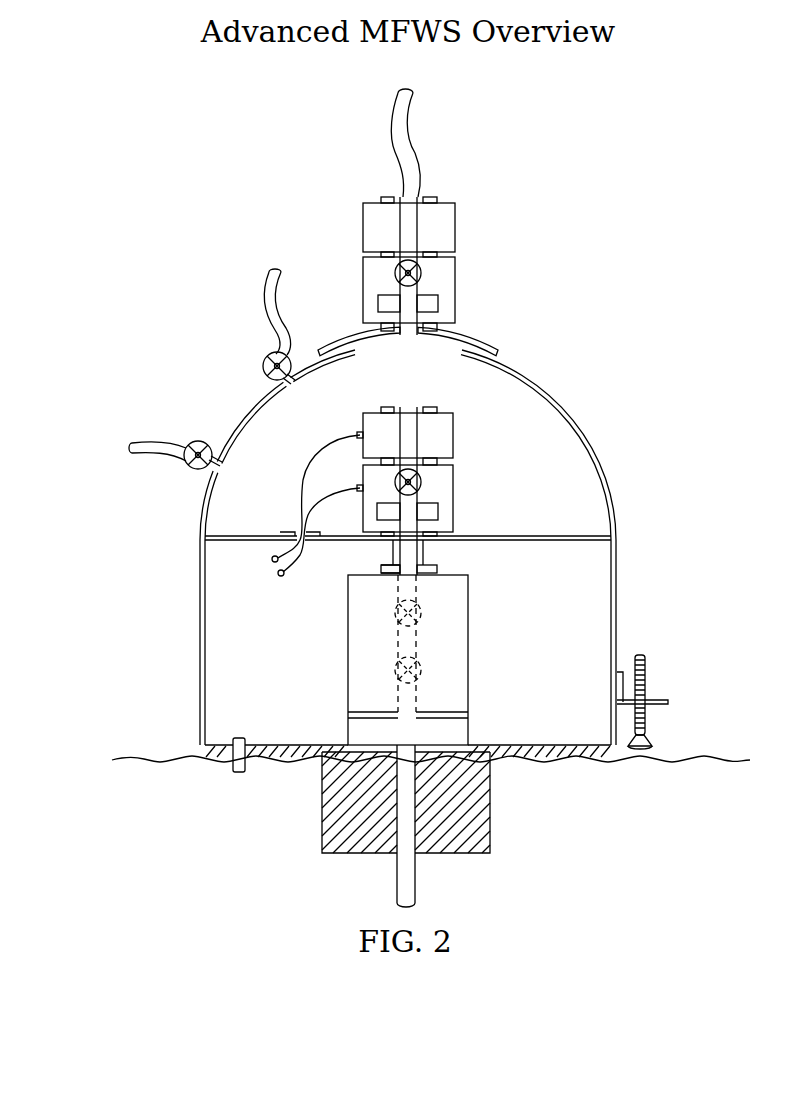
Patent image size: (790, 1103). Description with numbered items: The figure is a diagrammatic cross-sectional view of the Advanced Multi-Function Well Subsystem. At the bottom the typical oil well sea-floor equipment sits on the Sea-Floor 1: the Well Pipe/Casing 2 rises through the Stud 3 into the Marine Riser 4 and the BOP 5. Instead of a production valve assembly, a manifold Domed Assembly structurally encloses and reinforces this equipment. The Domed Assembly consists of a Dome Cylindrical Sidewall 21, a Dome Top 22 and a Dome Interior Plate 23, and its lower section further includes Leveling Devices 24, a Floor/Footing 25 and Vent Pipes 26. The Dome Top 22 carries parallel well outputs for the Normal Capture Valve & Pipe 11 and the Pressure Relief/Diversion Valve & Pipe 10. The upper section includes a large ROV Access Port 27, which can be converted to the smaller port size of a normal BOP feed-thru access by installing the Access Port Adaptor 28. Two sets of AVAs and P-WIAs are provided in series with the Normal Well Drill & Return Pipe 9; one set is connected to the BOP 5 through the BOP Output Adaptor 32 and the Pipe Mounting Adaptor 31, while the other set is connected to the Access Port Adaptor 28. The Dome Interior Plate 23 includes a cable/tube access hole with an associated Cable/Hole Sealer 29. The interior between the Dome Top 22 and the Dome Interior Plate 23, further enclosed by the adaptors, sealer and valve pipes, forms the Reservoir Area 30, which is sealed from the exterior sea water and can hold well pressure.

The Sea-Floor 1 is at (392, 765).
The Well Pipe/Casing 2 is at (451, 833).
The Stud 3 is at (406, 802).
The Marine Riser 4 is at (408, 728).
The BOP 5 is at (408, 660).
The Normal Well Drill & Return Pipe 9 is at (408, 204).
The Pressure Relief/Diversion Valve & Pipe 10 is at (164, 455).
The Normal Capture Valve & Pipe 11 is at (279, 318).
The Dome Cylindrical Sidewall 21 is at (640, 568).
The Dome Top 22 is at (622, 455).
The Dome Interior Plate 23 is at (408, 529).
The Leveling Devices 24 is at (646, 702).
The Floor/Footing 25 is at (408, 743).
The Vent Pipes 26 is at (244, 742).
The ROV Access Port 27 is at (506, 337).
The Access Port Adaptor 28 is at (408, 341).
The Cable/Hole Sealer 29 is at (317, 504).
The Reservoir Area 30 is at (522, 401).
The Pipe Mounting Adaptor 31 is at (464, 552).
The BOP Output Adaptor 32 is at (372, 558).